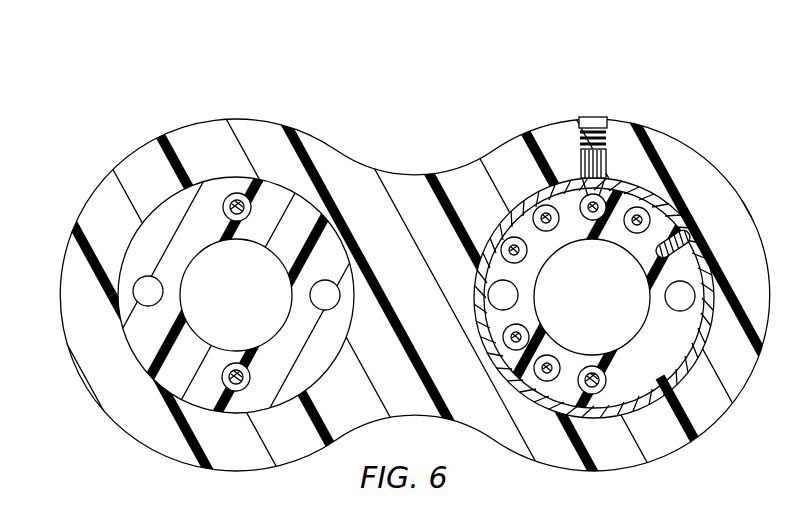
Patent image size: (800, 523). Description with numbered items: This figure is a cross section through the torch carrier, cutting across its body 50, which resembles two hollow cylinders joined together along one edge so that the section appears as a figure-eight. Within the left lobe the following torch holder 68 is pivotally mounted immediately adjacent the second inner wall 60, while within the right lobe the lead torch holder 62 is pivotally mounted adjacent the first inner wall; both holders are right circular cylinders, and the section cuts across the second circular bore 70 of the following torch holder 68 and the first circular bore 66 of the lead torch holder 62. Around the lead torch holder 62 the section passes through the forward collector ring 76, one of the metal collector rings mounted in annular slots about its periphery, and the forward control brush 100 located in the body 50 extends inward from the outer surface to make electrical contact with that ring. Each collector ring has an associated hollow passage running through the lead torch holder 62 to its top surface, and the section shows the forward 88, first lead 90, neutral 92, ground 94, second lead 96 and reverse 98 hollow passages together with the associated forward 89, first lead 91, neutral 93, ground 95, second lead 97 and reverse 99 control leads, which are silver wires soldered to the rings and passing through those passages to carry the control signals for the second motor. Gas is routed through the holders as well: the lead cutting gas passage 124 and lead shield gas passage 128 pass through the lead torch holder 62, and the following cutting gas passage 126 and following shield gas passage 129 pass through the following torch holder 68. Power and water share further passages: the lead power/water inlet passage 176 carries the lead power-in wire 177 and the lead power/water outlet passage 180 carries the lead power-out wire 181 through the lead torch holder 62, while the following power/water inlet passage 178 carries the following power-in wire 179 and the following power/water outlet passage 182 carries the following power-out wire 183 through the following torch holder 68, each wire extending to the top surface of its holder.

The body 50 is at (147, 142).
The second inner wall 60 is at (136, 348).
The lead torch holder 62 is at (730, 378).
The first circular bore 66 is at (700, 348).
The following torch holder 68 is at (222, 379).
The second circular bore 70 is at (273, 262).
The forward collector ring 76 is at (490, 366).
The forward hollow passage 88 is at (686, 236).
The forward control lead 89 is at (655, 258).
The first lead hollow passage 90 is at (642, 210).
The first lead control lead 91 is at (630, 230).
The neutral hollow passage 92 is at (540, 208).
The neutral control lead 93 is at (551, 230).
The ground hollow passage 94 is at (508, 240).
The ground control lead 95 is at (524, 256).
The second lead hollow passage 96 is at (525, 332).
The second lead control lead 97 is at (506, 338).
The reverse hollow passage 98 is at (553, 358).
The reverse control lead 99 is at (548, 382).
The forward control brush 100 is at (602, 117).
The lead cutting gas passage 124 is at (488, 292).
The following cutting gas passage 126 is at (345, 255).
The lead shield gas passage 128 is at (665, 296).
The following shield gas passage 129 is at (137, 280).
The lead power/water inlet passage 176 is at (586, 196).
The lead power-in wire 177 is at (593, 220).
The following power/water inlet passage 178 is at (236, 193).
The following power-in wire 179 is at (234, 196).
The lead power/water outlet passage 180 is at (603, 377).
The lead power-out wire 181 is at (600, 388).
The following power/water outlet passage 182 is at (172, 388).
The following power-out wire 183 is at (246, 386).